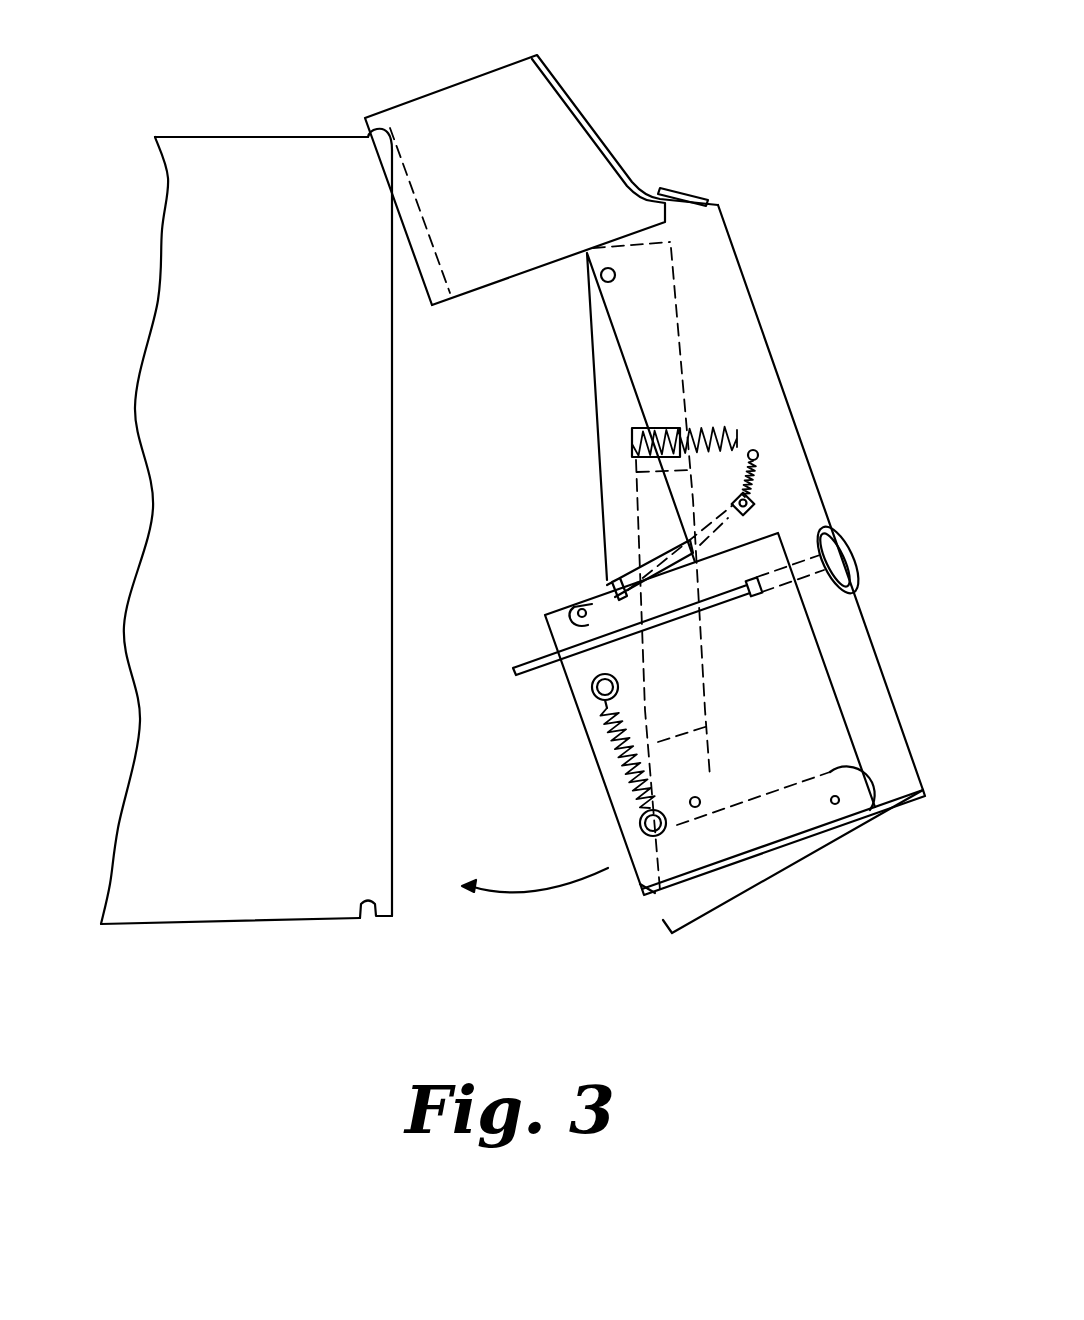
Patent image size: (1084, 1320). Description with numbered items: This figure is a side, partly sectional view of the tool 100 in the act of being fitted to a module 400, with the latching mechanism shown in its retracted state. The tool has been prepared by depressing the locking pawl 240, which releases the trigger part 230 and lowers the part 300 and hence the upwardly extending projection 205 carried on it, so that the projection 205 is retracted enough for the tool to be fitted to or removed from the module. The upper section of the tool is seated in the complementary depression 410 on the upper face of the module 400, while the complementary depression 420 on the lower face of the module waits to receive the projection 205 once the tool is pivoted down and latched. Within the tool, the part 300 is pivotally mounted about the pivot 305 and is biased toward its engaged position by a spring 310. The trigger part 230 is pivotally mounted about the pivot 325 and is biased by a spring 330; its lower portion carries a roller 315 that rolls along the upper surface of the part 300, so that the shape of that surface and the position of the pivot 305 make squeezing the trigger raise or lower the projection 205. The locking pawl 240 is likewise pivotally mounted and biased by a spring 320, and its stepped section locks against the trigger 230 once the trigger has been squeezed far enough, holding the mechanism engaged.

The tool 100 is at (615, 74).
The upwardly extending projection 205 is at (640, 907).
The trigger part 230 is at (613, 397).
The locking pawl 240 is at (597, 603).
The part 300 is at (735, 878).
The pivot 305 is at (840, 803).
The spring 310 is at (618, 755).
The roller 315 is at (700, 797).
The spring 320 is at (757, 470).
The pivot 325 is at (615, 273).
The spring 330 is at (733, 425).
The module 400 is at (210, 170).
The complementary depression 410 is at (370, 150).
The complementary depression 420 is at (362, 932).